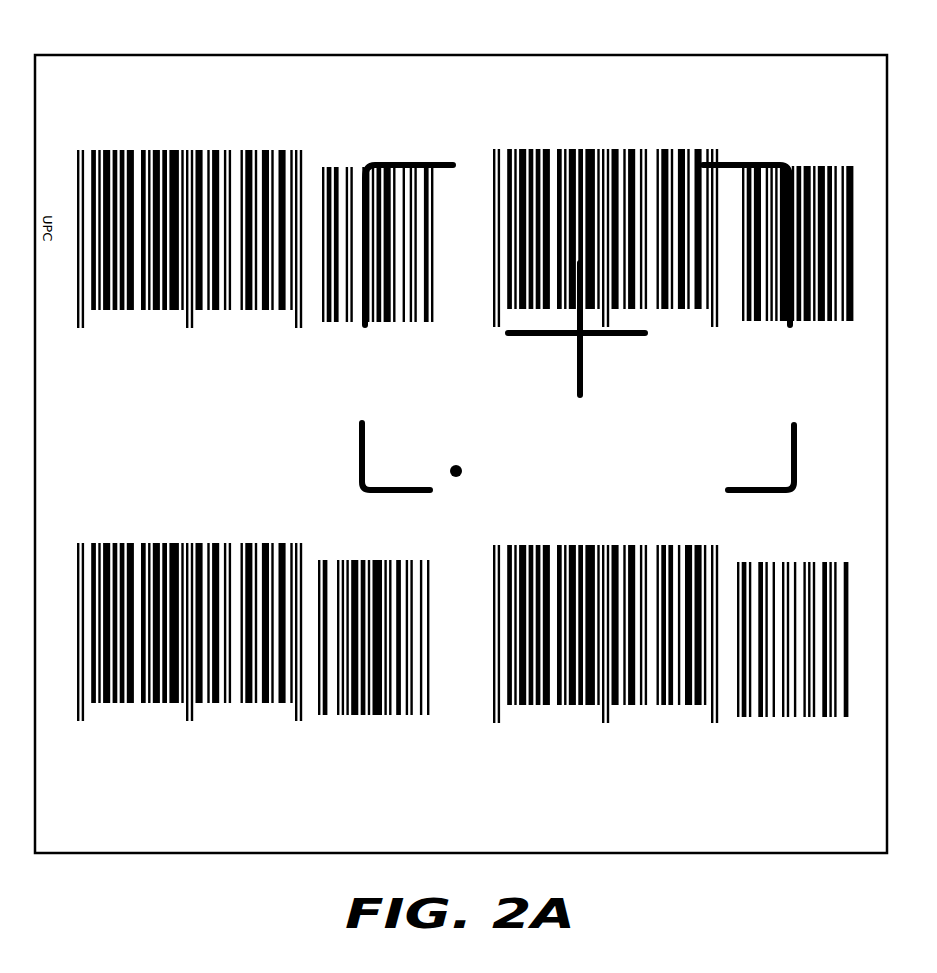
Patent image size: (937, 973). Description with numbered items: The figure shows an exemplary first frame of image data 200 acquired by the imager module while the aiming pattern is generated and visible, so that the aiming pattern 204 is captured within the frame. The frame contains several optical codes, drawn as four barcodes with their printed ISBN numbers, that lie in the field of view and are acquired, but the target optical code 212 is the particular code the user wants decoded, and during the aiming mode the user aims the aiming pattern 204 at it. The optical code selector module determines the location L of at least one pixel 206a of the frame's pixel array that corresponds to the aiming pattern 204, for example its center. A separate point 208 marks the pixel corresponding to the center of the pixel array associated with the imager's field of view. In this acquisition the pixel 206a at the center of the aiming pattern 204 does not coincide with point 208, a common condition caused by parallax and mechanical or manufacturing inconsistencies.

The first frame of image data 200 is at (460, 55).
The aiming pattern 204 is at (790, 435).
The pixel 206a is at (588, 350).
The point 208 is at (449, 458).
The target optical code 212 is at (669, 142).